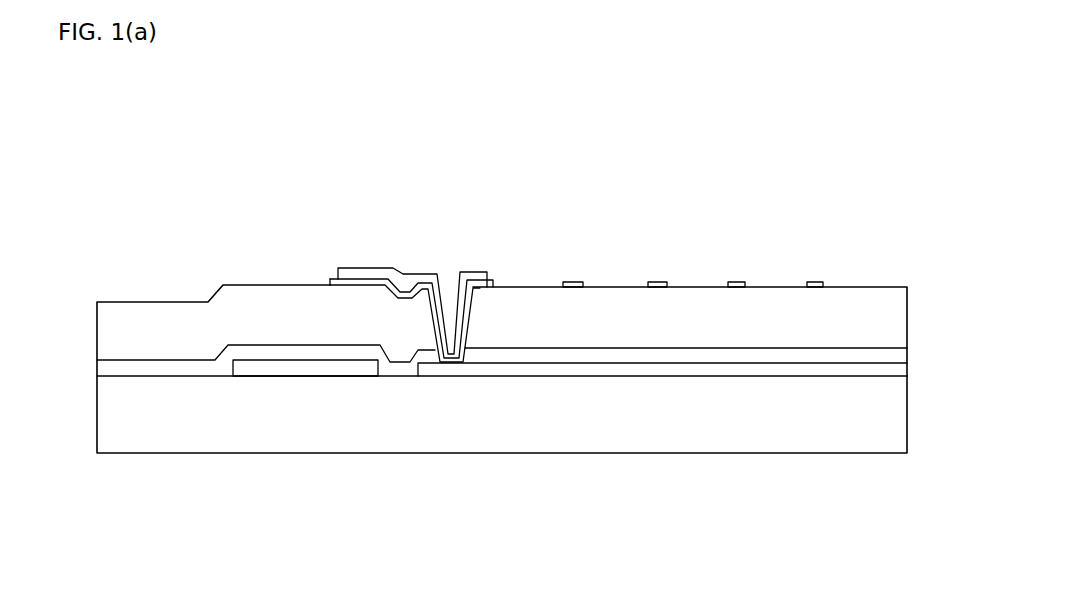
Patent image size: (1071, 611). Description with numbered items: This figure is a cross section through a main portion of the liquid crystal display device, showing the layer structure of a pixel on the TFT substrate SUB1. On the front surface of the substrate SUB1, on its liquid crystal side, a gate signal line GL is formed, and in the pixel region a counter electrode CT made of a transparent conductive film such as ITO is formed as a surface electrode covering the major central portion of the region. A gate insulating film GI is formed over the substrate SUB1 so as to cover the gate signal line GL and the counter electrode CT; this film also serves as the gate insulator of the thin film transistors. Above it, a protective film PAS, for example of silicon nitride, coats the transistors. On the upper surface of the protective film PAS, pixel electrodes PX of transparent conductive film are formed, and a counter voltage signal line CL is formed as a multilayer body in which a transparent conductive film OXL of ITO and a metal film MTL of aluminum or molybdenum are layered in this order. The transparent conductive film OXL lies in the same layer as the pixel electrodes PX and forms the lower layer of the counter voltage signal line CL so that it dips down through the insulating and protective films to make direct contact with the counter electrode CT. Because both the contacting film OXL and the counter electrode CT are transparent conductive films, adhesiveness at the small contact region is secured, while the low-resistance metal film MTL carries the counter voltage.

The substrate SUB1 is at (217, 418).
The protective film PAS is at (250, 332).
The gate signal line GL is at (327, 367).
The gate insulating film GI is at (593, 356).
The counter electrode CT is at (730, 368).
The counter voltage signal line CL is at (478, 220).
The transparent conductive film OXL is at (440, 296).
The metal film MTL is at (381, 272).
The pixel electrode PX is at (575, 282).